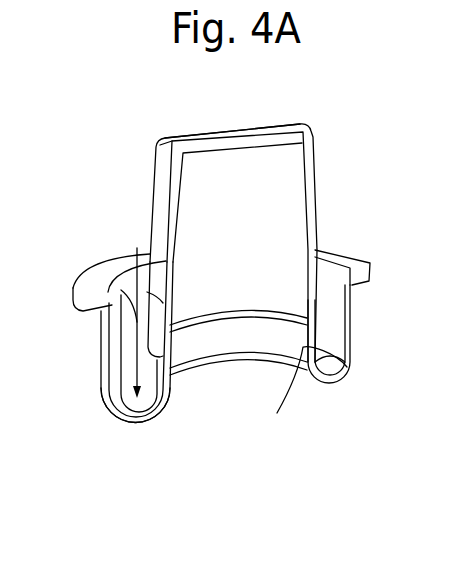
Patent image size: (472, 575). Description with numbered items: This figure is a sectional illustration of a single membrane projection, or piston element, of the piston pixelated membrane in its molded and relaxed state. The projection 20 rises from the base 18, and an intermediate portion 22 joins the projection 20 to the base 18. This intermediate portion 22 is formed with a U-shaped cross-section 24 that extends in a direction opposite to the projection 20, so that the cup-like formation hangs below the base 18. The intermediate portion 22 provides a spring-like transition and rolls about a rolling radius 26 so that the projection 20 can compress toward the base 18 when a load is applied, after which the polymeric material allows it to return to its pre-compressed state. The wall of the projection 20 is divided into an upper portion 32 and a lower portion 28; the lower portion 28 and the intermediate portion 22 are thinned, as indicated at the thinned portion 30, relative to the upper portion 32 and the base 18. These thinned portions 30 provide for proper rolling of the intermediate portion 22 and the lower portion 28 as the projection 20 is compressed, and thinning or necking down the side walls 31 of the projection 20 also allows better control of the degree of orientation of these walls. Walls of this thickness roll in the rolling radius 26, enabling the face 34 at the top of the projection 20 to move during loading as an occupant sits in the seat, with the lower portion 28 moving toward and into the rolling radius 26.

The base 18 is at (90, 284).
The projection 20 is at (336, 137).
The intermediate portion 22 is at (97, 282).
The U-shaped cross-section 24 is at (167, 383).
The rolling radius 26 is at (143, 423).
The lower portion 28 is at (308, 394).
The thinned portion 30 is at (350, 363).
The side wall 31 is at (152, 303).
The upper portion 32 is at (331, 237).
The face 34 is at (252, 126).